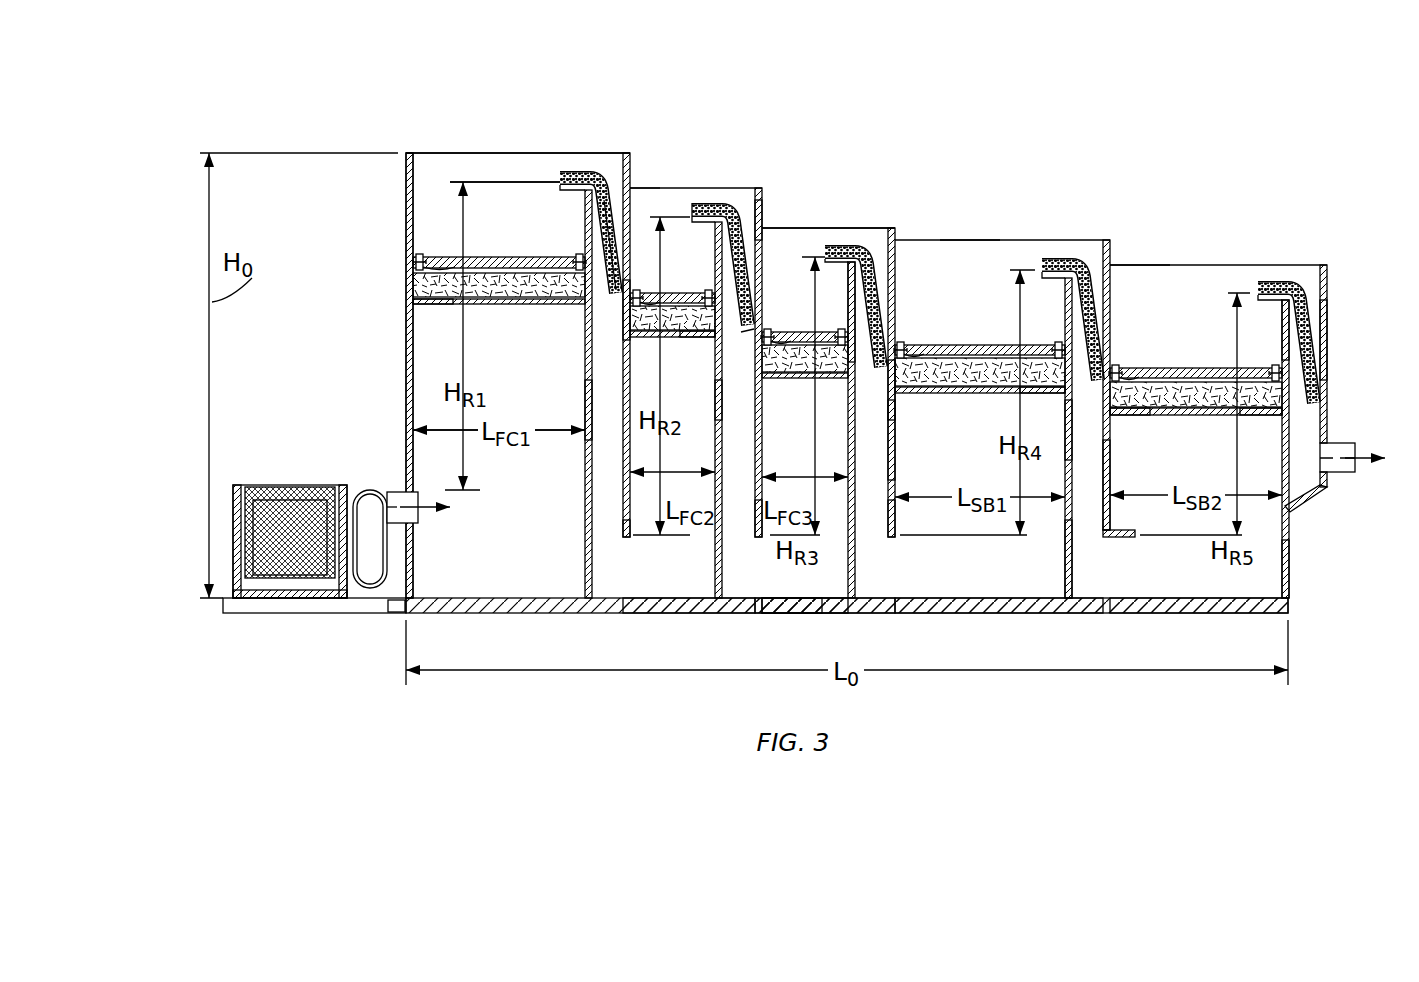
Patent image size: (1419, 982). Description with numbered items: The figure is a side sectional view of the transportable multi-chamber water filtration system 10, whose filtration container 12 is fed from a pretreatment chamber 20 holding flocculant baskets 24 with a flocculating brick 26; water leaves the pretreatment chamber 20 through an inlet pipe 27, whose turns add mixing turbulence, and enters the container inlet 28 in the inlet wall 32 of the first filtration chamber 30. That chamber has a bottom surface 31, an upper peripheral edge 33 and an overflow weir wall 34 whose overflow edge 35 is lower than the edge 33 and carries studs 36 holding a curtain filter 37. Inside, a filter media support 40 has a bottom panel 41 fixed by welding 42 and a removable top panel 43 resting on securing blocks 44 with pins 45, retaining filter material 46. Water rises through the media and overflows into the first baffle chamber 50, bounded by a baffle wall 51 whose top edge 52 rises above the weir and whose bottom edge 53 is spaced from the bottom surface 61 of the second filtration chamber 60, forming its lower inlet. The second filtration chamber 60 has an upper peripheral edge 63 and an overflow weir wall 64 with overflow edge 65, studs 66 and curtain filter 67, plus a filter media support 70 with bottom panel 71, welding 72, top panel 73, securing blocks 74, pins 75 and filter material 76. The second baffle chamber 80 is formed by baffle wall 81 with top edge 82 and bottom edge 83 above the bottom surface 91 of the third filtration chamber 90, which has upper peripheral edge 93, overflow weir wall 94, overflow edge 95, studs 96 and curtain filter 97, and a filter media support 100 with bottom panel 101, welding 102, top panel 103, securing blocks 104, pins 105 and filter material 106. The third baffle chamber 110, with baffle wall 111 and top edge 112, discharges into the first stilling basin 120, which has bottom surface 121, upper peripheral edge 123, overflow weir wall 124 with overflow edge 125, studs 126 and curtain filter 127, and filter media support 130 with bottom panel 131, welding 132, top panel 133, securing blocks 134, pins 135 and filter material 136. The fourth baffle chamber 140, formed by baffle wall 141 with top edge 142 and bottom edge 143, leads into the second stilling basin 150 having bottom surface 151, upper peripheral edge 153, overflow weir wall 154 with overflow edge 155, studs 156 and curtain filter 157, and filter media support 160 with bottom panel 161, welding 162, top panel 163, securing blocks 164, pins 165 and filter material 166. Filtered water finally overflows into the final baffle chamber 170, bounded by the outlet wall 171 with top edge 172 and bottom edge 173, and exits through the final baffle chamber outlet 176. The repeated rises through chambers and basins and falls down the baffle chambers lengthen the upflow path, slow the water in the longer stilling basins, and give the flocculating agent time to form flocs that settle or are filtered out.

The multi-chamber water filtration system 10 is at (368, 105).
The filtration container 12 is at (404, 318).
The pretreatment chamber 20 is at (229, 520).
The flocculant baskets 24 is at (283, 500).
The flocculating brick 26 is at (285, 578).
The inlet pipe 27 is at (368, 505).
The container inlet 28 is at (418, 515).
The first filtration chamber 30 is at (470, 177).
The bottom surface 31 is at (488, 600).
The inlet wall 32 is at (406, 213).
The upper peripheral edge 33 is at (415, 153).
The overflow weir wall 34 is at (592, 290).
The overflow edge 35 is at (562, 180).
The studs 36 is at (562, 172).
The curtain filter 37 is at (600, 178).
The filter media support 40 is at (499, 275).
The bottom panel 41 is at (487, 305).
The welding 42 is at (415, 305).
The top panel 43 is at (520, 257).
The securing blocks 44 is at (422, 258).
The pins 45 is at (416, 257).
The filter material 46 is at (530, 305).
The first baffle chamber 50 is at (602, 158).
The baffle wall 51 is at (616, 410).
The top edge 52 is at (625, 155).
The bottom edge 53 is at (632, 538).
The second filtration chamber 60 is at (685, 204).
The bottom surface 61 is at (672, 600).
The upper peripheral edge 63 is at (632, 322).
The overflow weir wall 64 is at (722, 490).
The overflow edge 65 is at (700, 223).
The studs 66 is at (695, 210).
The curtain filter 67 is at (744, 334).
The filter media support 70 is at (671, 224).
The bottom panel 71 is at (672, 338).
The lower support 72 is at (637, 338).
The top panel 73 is at (648, 290).
The securing blocks 74 is at (645, 291).
The pins 75 is at (632, 190).
The filter material 76 is at (700, 338).
The second baffle chamber 80 is at (745, 227).
The baffle wall 81 is at (726, 400).
The top edge 82 is at (757, 228).
The bottom edge 83 is at (757, 540).
The third filtration chamber 90 is at (815, 250).
The bottom surface 91 is at (776, 600).
The upper peripheral edge 93 is at (775, 228).
The overflow weir wall 94 is at (815, 540).
The overflow edge 95 is at (838, 263).
The studs 96 is at (832, 250).
The curtain filter 97 is at (878, 372).
The filter media support 100 is at (803, 255).
The bottom panel 101 is at (797, 483).
The welding 102 is at (783, 379).
The top panel 103 is at (770, 230).
The securing blocks 104 is at (790, 345).
The pins 105 is at (765, 330).
The filter material 106 is at (838, 379).
The third baffle chamber 110 is at (870, 226).
The baffle wall 111 is at (880, 470).
The top edge 112 is at (880, 228).
The first stilling basin 120 is at (921, 262).
The bottom surface 121 is at (1015, 600).
The upper peripheral edge 123 is at (975, 256).
The overflow weir wall 124 is at (1065, 560).
The overflow edge 125 is at (1043, 292).
The studs 126 is at (1048, 256).
The curtain filter 127 is at (1066, 430).
The filter media support 130 is at (978, 351).
The bottom panel 131 is at (985, 393).
The welding 132 is at (895, 400).
The top panel 133 is at (960, 345).
The securing blocks 134 is at (905, 356).
The pins 135 is at (898, 345).
The filter material 136 is at (1040, 394).
The fourth baffle chamber 140 is at (1092, 283).
The baffle wall 141 is at (1090, 480).
The top edge 142 is at (1098, 250).
The bottom edge 143 is at (1128, 537).
The second stilling basin 150 is at (1185, 278).
The bottom surface 151 is at (1155, 600).
The upper peripheral edge 153 is at (1148, 278).
The overflow weir wall 154 is at (1282, 575).
The overflow edge 155 is at (1265, 305).
The studs 156 is at (1262, 283).
The curtain filter 157 is at (1300, 465).
The filter media support 160 is at (1194, 373).
The bottom panel 161 is at (1195, 416).
The welding 162 is at (1115, 416).
The top panel 163 is at (1172, 368).
The securing blocks 164 is at (1125, 380).
The pins 165 is at (1113, 368).
The filter material 166 is at (1262, 416).
The final baffle chamber 170 is at (1275, 282).
The outlet wall 171 is at (1327, 335).
The top edge 172 is at (1308, 300).
The bottom edge 173 is at (1300, 508).
The final baffle chamber outlet 176 is at (1342, 473).